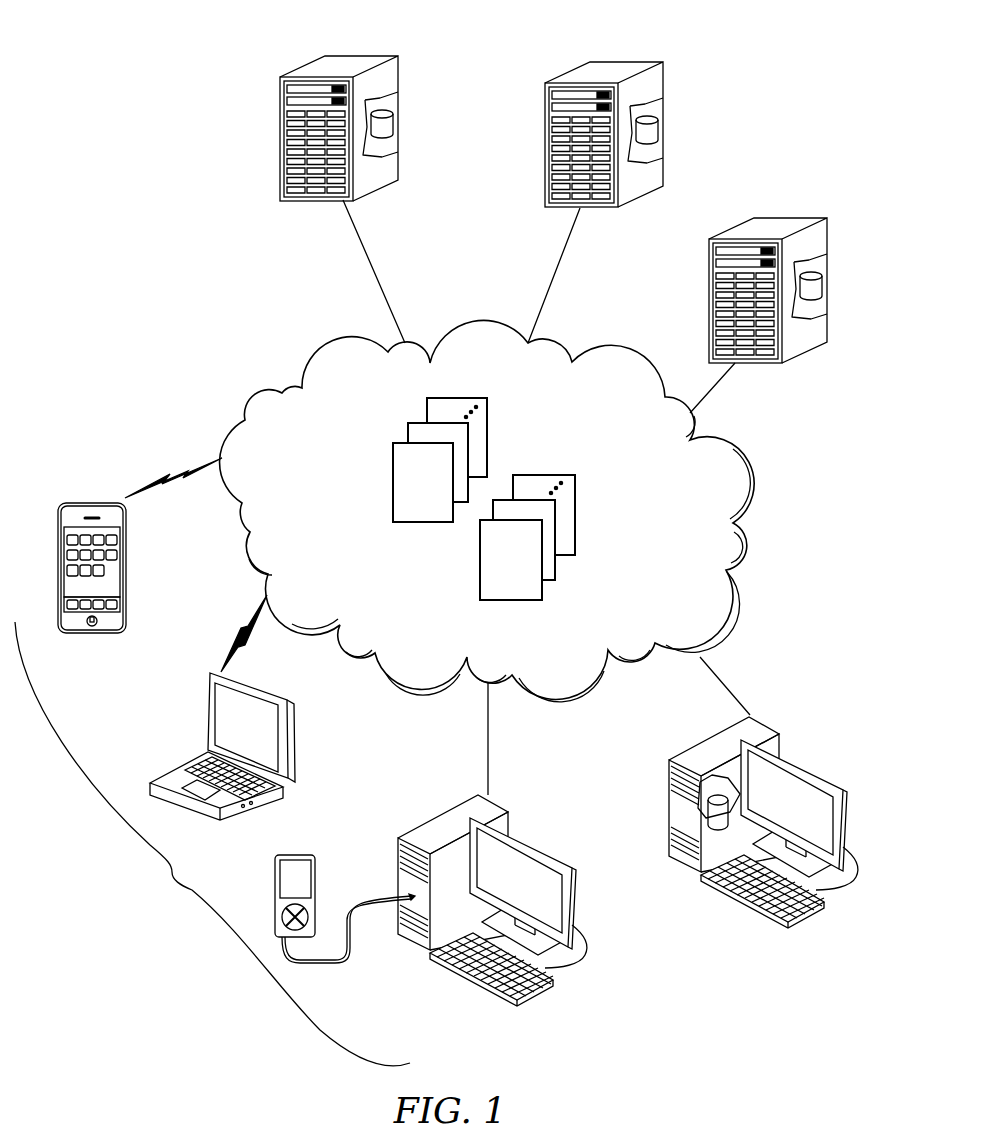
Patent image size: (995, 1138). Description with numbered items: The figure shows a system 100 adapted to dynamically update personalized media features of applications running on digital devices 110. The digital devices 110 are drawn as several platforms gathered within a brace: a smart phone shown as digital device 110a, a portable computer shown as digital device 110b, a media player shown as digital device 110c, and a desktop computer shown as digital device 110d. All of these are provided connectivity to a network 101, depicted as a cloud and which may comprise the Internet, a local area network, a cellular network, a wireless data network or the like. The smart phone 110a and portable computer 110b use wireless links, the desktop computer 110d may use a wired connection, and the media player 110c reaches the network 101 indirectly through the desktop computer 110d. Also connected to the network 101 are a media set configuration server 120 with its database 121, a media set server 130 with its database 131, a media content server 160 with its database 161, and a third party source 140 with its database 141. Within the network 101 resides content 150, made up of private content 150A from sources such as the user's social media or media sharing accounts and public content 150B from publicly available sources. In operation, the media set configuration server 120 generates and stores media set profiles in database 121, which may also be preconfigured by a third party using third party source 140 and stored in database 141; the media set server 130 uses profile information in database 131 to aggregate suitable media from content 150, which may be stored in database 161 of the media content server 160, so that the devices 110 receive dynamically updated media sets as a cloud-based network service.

The system 100 is at (148, 200).
The network 101 is at (753, 450).
The digital devices 110 is at (212, 844).
The digital device 110a is at (128, 535).
The digital device 110b is at (290, 740).
The digital device 110c is at (320, 893).
The digital device 110d is at (576, 905).
The media set configuration server 120 is at (341, 102).
The database 121 is at (398, 123).
The media set server 130 is at (605, 120).
The database 131 is at (663, 133).
The third party source 140 is at (737, 832).
The database 141 is at (705, 808).
The content 150 is at (460, 522).
The private content 150A is at (423, 390).
The public content 150B is at (587, 553).
The media content server 160 is at (765, 265).
The database 161 is at (827, 289).